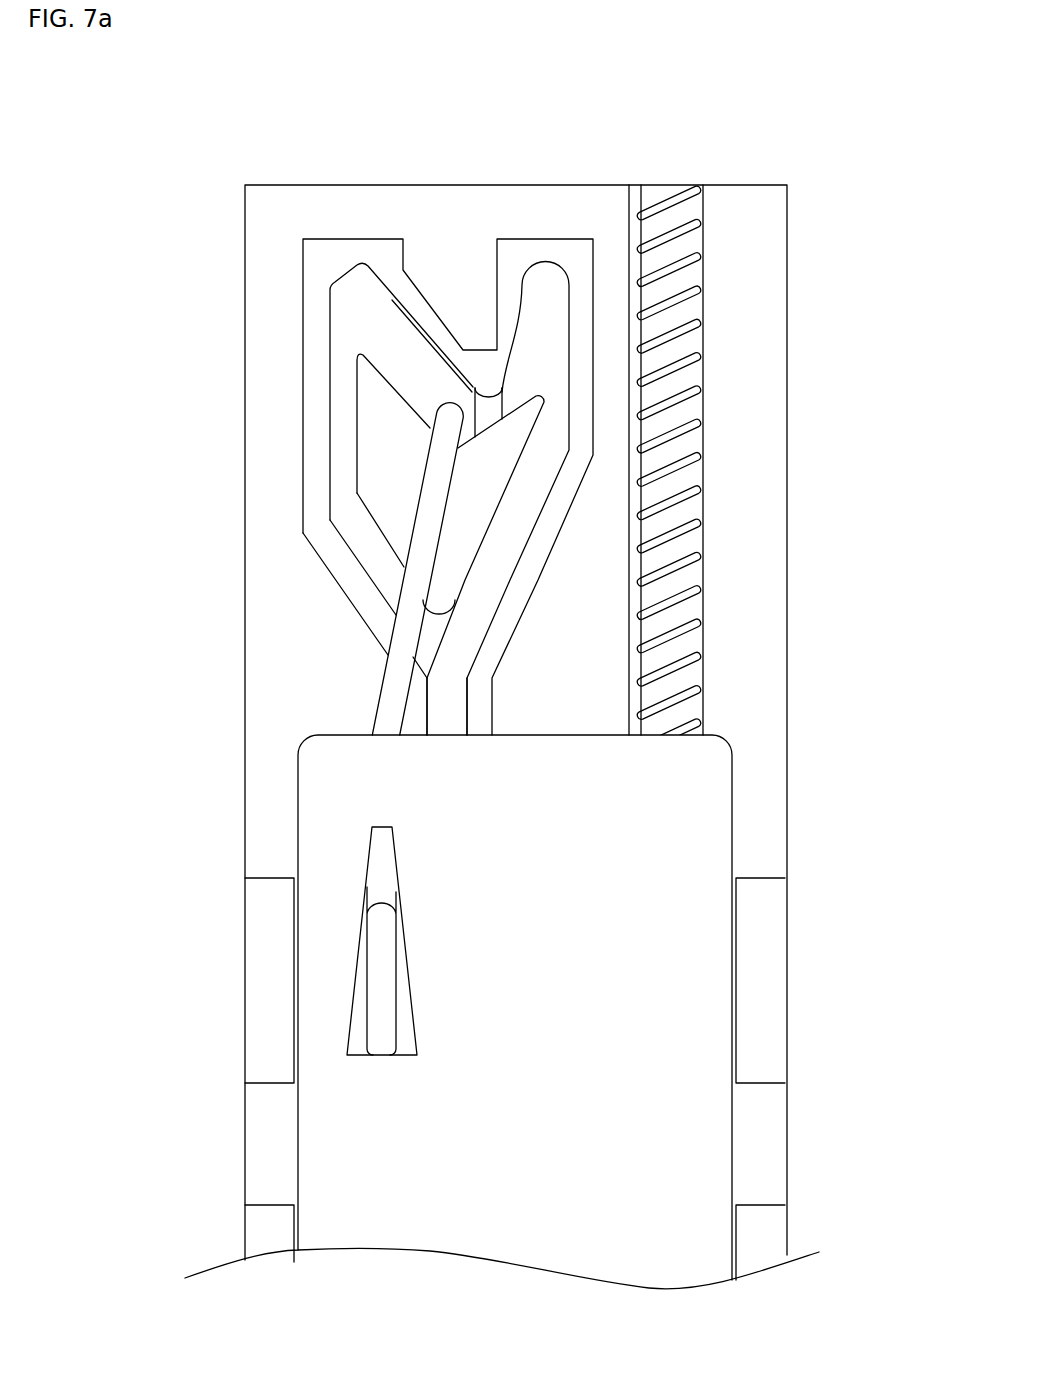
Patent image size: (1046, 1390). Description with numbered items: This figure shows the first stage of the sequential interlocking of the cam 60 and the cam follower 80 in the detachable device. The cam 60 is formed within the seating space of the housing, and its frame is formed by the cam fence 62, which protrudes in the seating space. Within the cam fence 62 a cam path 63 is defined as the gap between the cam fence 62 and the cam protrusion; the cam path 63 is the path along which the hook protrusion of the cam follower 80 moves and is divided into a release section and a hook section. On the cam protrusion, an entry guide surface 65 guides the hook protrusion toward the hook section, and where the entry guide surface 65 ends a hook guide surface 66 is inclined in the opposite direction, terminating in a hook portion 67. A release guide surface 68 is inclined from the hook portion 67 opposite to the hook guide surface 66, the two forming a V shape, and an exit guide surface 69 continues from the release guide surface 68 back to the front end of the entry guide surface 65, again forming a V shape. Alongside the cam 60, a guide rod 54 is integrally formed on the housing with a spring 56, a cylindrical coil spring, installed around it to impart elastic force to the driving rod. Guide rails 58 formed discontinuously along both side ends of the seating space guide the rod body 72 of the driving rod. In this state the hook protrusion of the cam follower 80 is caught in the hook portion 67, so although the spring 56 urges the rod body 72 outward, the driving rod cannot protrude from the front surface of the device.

The guide rod 54 is at (672, 410).
The spring 56 is at (698, 288).
The guide rails 58 is at (266, 980).
The cam 60 is at (263, 300).
The cam fence 62 is at (332, 552).
The cam path 63 is at (447, 705).
The entry guide surface 65 is at (493, 525).
The hook guide surface 66 is at (500, 388).
The hook portion 67 is at (477, 387).
The release guide surface 68 is at (378, 372).
The exit guide surface 69 is at (370, 517).
The rod body 72 is at (708, 958).
The cam follower 80 is at (398, 638).